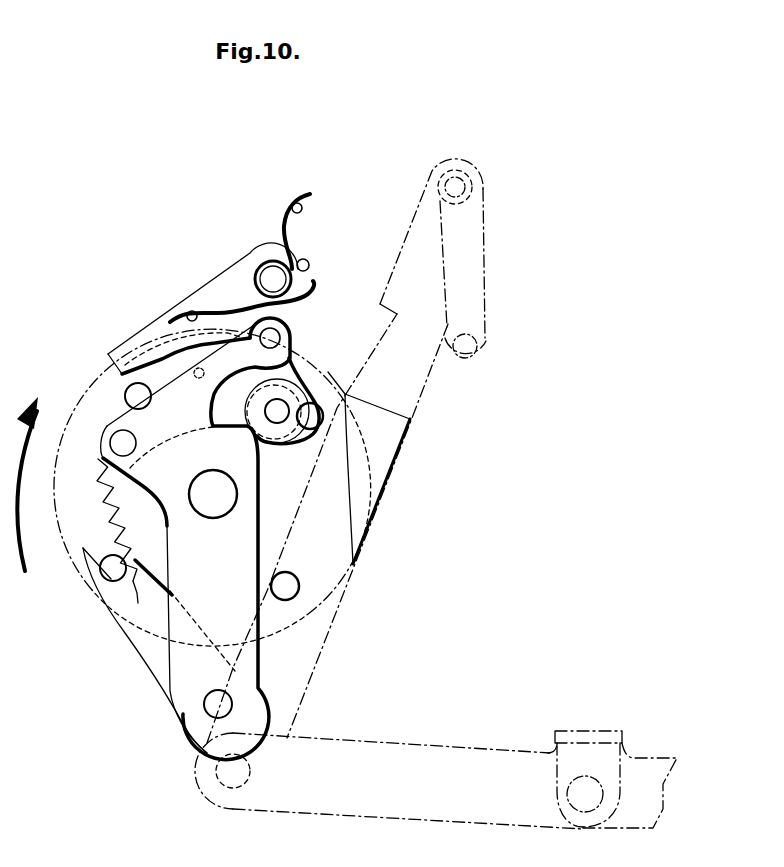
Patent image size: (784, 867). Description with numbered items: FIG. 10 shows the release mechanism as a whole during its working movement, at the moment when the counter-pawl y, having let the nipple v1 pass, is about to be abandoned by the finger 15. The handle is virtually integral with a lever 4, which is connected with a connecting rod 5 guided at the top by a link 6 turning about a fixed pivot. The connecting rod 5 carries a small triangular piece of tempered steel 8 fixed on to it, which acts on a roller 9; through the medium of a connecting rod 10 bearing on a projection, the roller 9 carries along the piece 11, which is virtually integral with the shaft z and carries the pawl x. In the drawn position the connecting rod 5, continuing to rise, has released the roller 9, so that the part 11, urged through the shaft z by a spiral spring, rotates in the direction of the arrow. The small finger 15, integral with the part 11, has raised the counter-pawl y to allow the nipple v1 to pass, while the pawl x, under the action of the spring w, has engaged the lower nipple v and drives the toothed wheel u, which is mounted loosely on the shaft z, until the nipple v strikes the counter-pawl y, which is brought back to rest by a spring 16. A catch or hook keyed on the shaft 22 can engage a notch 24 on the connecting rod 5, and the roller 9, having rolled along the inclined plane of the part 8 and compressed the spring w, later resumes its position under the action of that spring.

The lever 4 is at (436, 780).
The connecting rod 5 is at (345, 451).
The link 6 is at (484, 310).
The piece of tempered steel 8 is at (369, 468).
The roller 9 is at (278, 441).
The connecting rod 10 is at (269, 401).
The piece 11 is at (195, 539).
The finger 15 is at (282, 337).
The spring 16 is at (283, 231).
The shaft 22 is at (272, 278).
The notch 24 is at (396, 298).
The counter-pawl y is at (166, 322).
The nipple v is at (316, 402).
The nipple v1 is at (125, 395).
The shaft z is at (213, 494).
The spring w is at (107, 520).
The toothed wheel u is at (56, 503).
The pawl x is at (140, 650).
The hook Q is at (141, 602).